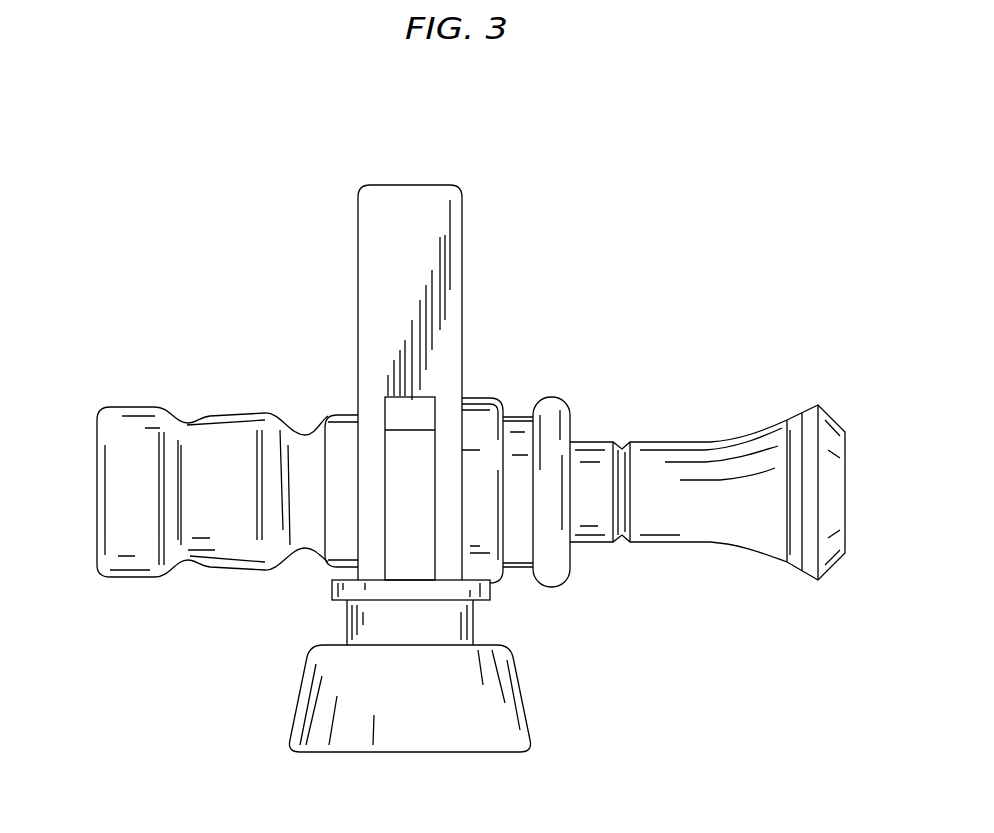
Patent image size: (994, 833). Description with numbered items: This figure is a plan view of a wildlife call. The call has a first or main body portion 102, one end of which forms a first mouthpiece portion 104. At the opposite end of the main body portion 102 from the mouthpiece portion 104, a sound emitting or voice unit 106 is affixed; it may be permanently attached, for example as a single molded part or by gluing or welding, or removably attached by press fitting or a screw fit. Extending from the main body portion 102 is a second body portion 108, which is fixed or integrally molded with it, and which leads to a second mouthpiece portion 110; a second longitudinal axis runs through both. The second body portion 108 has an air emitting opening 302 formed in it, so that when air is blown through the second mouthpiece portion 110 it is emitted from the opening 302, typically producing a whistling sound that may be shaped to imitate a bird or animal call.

The first or main body portion 102 is at (330, 416).
The first mouthpiece portion 104 is at (97, 455).
The sound emitting or voice unit 106 is at (675, 543).
The second body portion 108 is at (466, 236).
The second mouthpiece portion 110 is at (462, 752).
The air emitting opening 302 is at (420, 412).